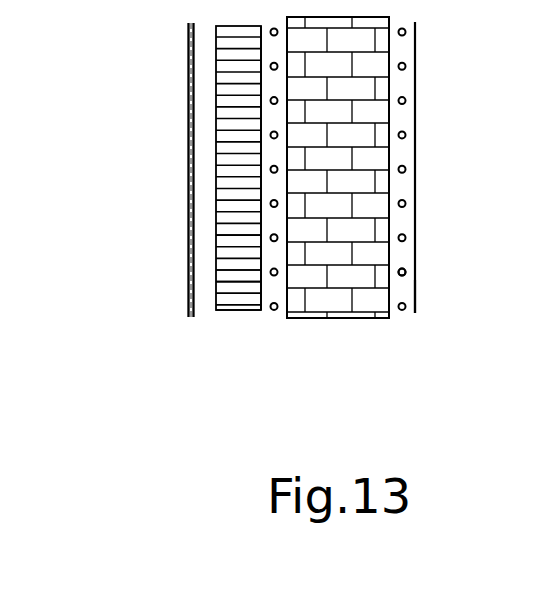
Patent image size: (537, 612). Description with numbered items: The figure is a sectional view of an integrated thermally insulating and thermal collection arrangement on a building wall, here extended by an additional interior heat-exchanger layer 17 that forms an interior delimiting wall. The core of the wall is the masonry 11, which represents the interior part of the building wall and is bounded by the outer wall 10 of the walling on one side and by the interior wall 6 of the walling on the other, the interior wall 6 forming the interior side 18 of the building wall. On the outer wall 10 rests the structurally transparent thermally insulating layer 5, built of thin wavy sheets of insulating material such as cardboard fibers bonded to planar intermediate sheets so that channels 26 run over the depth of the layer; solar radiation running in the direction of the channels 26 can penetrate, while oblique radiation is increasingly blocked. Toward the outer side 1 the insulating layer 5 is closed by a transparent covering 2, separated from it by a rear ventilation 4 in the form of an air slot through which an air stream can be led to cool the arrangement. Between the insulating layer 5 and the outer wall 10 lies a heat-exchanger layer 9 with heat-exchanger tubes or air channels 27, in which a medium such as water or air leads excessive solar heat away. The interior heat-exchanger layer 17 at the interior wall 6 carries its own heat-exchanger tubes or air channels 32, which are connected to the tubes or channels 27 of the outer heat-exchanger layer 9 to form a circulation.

The outer side 1 is at (177, 172).
The transparent covering 2 is at (188, 40).
The rear ventilation 4 is at (198, 72).
The structurally transparent thermally insulating layer 5 is at (238, 131).
The interior wall of the walling 6 is at (390, 256).
The heat-exchanger layer 9 is at (261, 261).
The outer wall of the walling 10 is at (283, 229).
The masonry 11 is at (353, 37).
The interior heat-exchanger layer 17 is at (402, 117).
The interior side 18 is at (423, 185).
The channels 26 is at (225, 275).
The heat-exchanger tubes or air channels 27 is at (275, 310).
The heat-exchanger tubes or air channels 32 is at (406, 273).